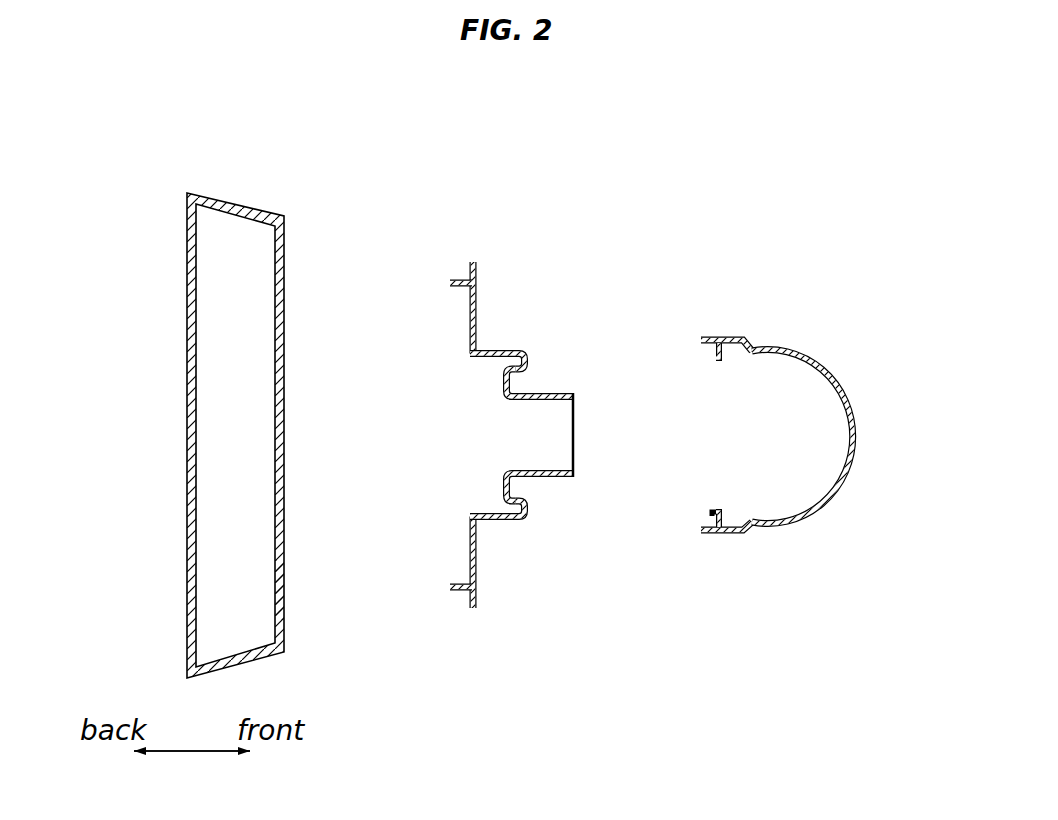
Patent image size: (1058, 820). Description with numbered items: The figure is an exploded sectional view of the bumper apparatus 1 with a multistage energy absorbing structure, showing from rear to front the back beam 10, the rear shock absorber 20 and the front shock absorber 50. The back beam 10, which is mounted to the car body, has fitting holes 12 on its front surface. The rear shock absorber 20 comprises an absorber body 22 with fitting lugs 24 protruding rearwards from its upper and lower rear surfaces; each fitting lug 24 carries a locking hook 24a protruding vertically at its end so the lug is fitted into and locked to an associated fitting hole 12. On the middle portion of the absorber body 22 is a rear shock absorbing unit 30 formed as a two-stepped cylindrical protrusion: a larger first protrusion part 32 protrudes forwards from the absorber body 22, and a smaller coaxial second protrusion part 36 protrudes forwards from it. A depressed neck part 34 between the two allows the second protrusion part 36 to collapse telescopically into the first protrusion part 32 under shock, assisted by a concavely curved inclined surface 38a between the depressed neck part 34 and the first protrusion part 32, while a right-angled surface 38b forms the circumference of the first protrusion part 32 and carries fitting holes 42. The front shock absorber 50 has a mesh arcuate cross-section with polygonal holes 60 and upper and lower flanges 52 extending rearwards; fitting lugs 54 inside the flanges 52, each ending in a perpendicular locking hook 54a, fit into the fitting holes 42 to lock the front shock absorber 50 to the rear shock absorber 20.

The bumper apparatus 1 is at (643, 205).
The back beam 10 is at (155, 322).
The fitting hole 12 is at (284, 588).
The rear shock absorber 20 is at (455, 312).
The absorber body 22 is at (468, 333).
The fitting lug 24 is at (468, 263).
The locking hook 24a is at (455, 283).
The rear shock absorbing unit 30 is at (580, 420).
The first protrusion part 32 is at (518, 345).
The depressed neck part 34 is at (518, 487).
The second protrusion part 36 is at (563, 393).
The inclined surface 38a is at (530, 380).
The right-angled surface 38b is at (508, 522).
The fitting hole 42 is at (492, 510).
The front shock absorber 50 is at (838, 358).
The flange 52 is at (722, 333).
The fitting lug 54 is at (748, 338).
The locking hook 54a is at (713, 511).
The polygonal hole 60 is at (830, 498).